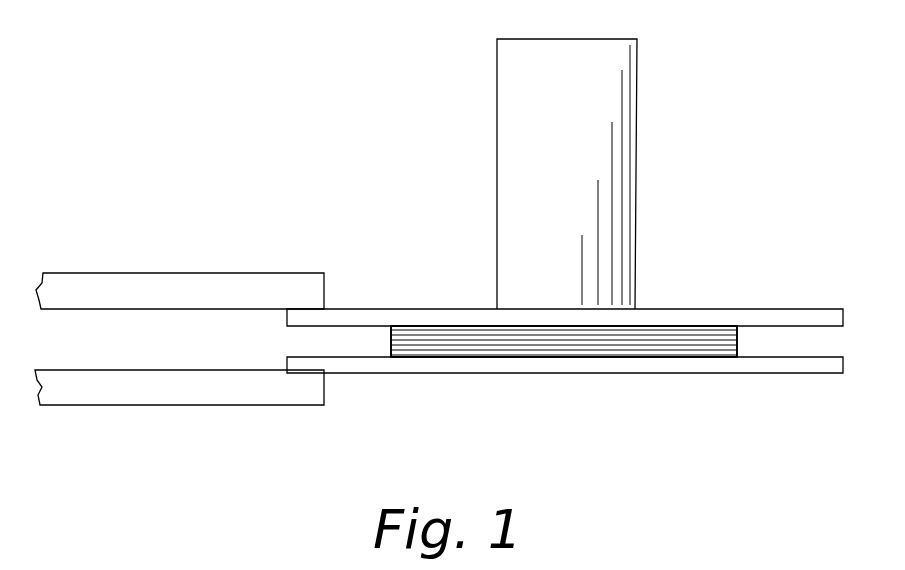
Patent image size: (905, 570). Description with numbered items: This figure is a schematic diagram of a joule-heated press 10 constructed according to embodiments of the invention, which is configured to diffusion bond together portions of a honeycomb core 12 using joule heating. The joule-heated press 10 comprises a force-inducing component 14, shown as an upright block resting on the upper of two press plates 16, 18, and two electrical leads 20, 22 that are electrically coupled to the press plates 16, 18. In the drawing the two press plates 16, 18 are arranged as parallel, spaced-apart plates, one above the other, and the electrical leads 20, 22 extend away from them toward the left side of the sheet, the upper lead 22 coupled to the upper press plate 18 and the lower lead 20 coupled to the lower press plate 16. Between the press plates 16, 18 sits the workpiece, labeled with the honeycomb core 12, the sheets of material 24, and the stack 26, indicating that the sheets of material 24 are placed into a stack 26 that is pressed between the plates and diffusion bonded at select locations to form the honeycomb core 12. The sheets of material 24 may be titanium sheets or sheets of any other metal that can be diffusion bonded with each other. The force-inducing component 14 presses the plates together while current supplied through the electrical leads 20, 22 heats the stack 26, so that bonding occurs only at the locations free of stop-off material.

The joule-heated press 10 is at (277, 94).
The honeycomb core 12 is at (562, 350).
The force-inducing component 14 is at (635, 138).
The press plate 16 is at (370, 373).
The press plate 18 is at (381, 310).
The electrical lead 20 is at (153, 405).
The electrical lead 22 is at (188, 273).
The sheets of material 24 is at (617, 423).
The stack 26 is at (617, 423).